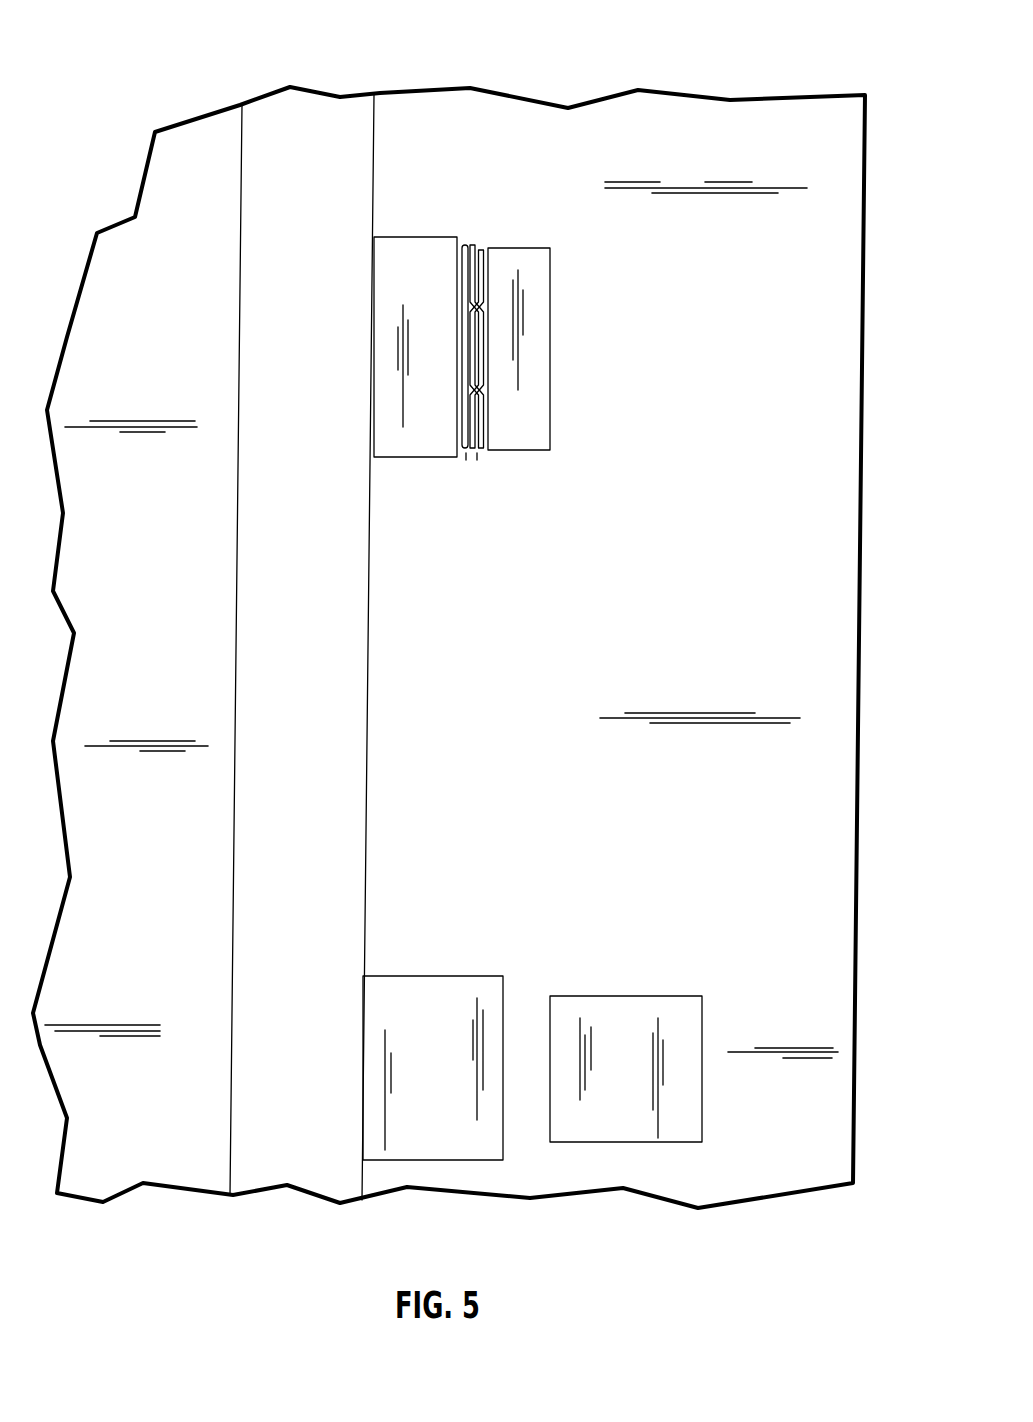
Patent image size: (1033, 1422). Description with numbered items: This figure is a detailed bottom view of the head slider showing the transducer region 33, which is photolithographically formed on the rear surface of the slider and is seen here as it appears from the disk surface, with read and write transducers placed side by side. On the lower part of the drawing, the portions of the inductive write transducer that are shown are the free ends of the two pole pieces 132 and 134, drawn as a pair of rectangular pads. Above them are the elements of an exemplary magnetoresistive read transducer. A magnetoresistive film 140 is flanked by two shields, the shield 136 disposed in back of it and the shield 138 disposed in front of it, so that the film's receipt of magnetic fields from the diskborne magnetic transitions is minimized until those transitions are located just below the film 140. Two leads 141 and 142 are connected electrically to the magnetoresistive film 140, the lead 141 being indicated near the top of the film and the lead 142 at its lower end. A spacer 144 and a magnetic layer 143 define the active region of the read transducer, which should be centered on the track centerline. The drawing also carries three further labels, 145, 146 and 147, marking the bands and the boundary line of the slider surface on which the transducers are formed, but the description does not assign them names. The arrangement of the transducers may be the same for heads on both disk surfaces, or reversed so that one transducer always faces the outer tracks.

The transducer region 33 is at (657, 72).
The pole piece 132 is at (420, 988).
The pole piece 134 is at (637, 1010).
The shield 136 is at (374, 420).
The shield 138 is at (545, 395).
The magnetoresistive film 140 is at (465, 242).
The lead 141 is at (480, 242).
The lead 142 is at (477, 453).
The magnetic layer 143 is at (466, 453).
The spacer 144 is at (470, 327).
The layer region 145 is at (315, 170).
The boundary line 146 is at (242, 273).
The layer region 147 is at (579, 161).